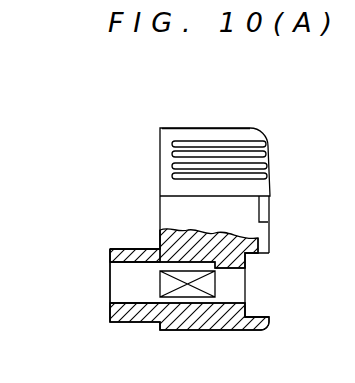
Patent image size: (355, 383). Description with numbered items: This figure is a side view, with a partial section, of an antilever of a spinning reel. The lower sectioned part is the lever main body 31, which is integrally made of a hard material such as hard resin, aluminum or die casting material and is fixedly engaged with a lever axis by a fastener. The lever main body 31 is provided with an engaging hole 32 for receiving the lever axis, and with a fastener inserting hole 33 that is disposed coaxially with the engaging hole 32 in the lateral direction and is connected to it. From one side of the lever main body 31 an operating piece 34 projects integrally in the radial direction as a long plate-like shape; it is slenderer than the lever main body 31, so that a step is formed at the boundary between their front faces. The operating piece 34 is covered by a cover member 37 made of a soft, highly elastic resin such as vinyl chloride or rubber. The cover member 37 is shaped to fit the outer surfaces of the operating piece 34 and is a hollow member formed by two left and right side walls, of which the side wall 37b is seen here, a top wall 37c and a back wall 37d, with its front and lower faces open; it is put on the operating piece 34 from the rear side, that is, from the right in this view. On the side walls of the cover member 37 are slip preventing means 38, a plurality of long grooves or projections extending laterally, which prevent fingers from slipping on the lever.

The lever main body 31 is at (217, 331).
The engaging hole 32 is at (118, 287).
The fastener inserting hole 33 is at (237, 285).
The operating piece 34 is at (165, 211).
The cover member 37 is at (160, 150).
The side wall 37b is at (168, 175).
The top wall 37c is at (240, 129).
The back wall 37d is at (272, 210).
The slip preventing means 38 is at (270, 158).